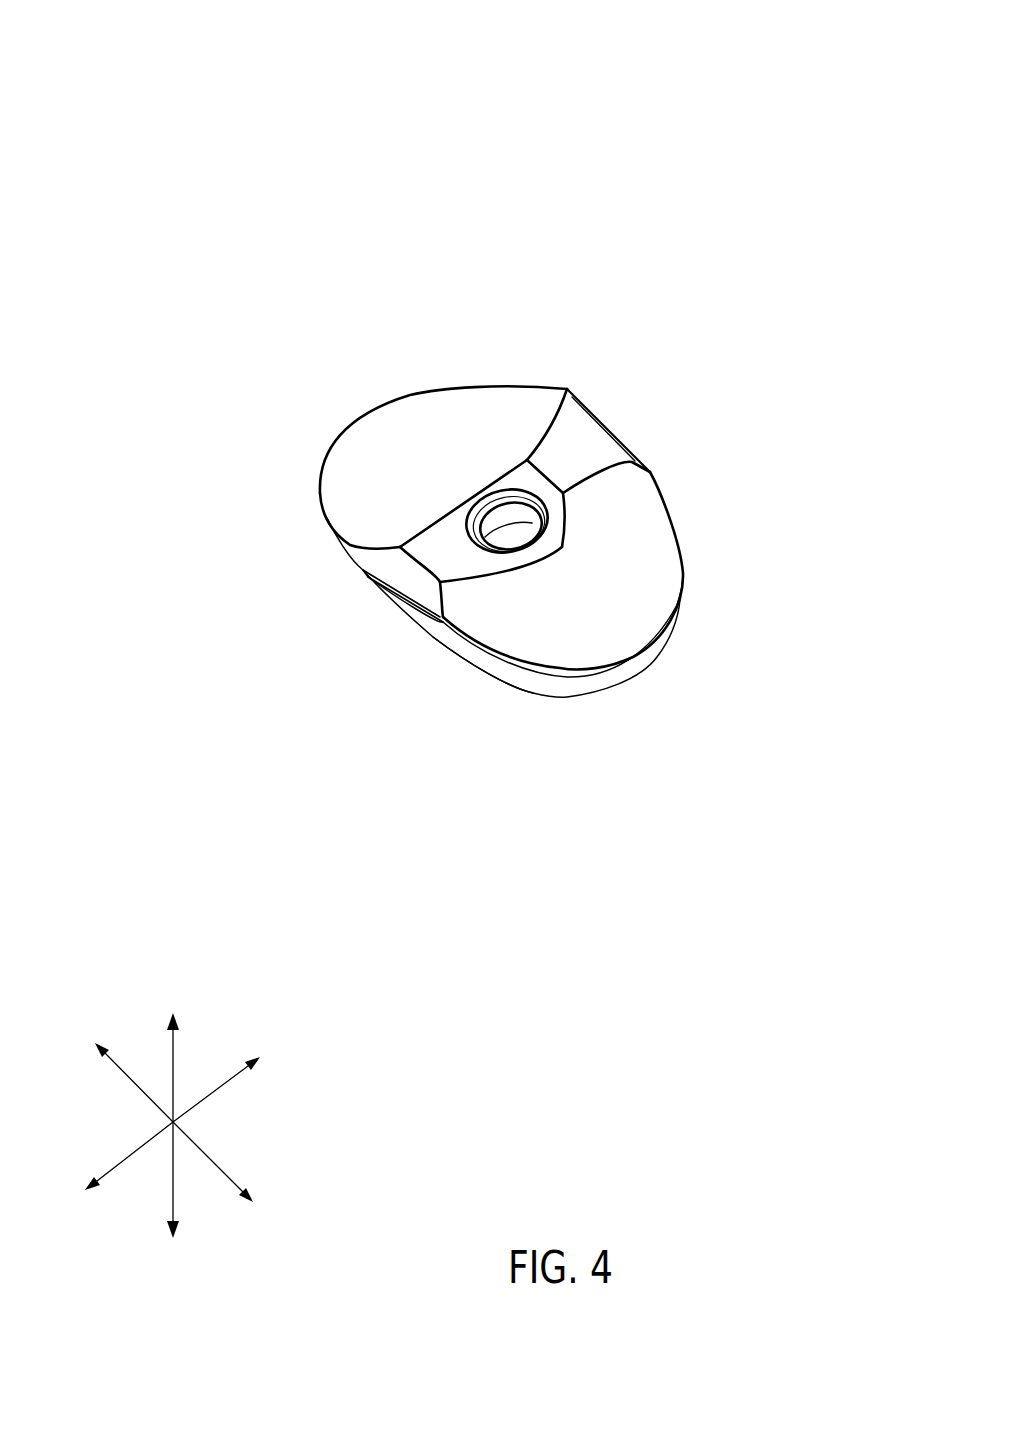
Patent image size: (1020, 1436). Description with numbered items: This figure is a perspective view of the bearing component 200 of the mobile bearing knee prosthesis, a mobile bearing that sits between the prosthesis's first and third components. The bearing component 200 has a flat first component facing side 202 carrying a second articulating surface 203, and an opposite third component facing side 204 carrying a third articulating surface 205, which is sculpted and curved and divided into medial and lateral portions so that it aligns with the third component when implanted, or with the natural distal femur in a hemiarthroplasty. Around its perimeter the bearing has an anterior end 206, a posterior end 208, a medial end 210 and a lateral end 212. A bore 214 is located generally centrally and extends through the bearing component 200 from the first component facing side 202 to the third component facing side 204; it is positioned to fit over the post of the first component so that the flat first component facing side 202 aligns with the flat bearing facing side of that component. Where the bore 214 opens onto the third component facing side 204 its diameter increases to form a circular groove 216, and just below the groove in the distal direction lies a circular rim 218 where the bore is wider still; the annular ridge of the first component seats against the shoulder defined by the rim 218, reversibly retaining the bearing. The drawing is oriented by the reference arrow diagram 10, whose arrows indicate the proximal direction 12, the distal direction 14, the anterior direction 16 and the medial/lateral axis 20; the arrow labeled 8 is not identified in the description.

The bearing component 200 is at (531, 186).
The first component facing side 202 is at (567, 698).
The second articulating surface 203 is at (532, 693).
The third component facing side 204 is at (622, 542).
The third articulating surface 205 is at (410, 418).
The anterior end 206 is at (363, 580).
The posterior end 208 is at (607, 420).
The medial end 210 is at (640, 663).
The lateral end 212 is at (364, 424).
The bore 214 is at (510, 540).
The circular groove 216 is at (490, 493).
The circular rim 218 is at (527, 490).
The reference arrow diagram 10 is at (128, 980).
The anterior direction 8 is at (227, 1077).
The proximal direction 12 is at (175, 1063).
The distal direction 14 is at (175, 1188).
The anterior direction 16 is at (120, 1168).
The medial/lateral axis 20 is at (133, 1077).